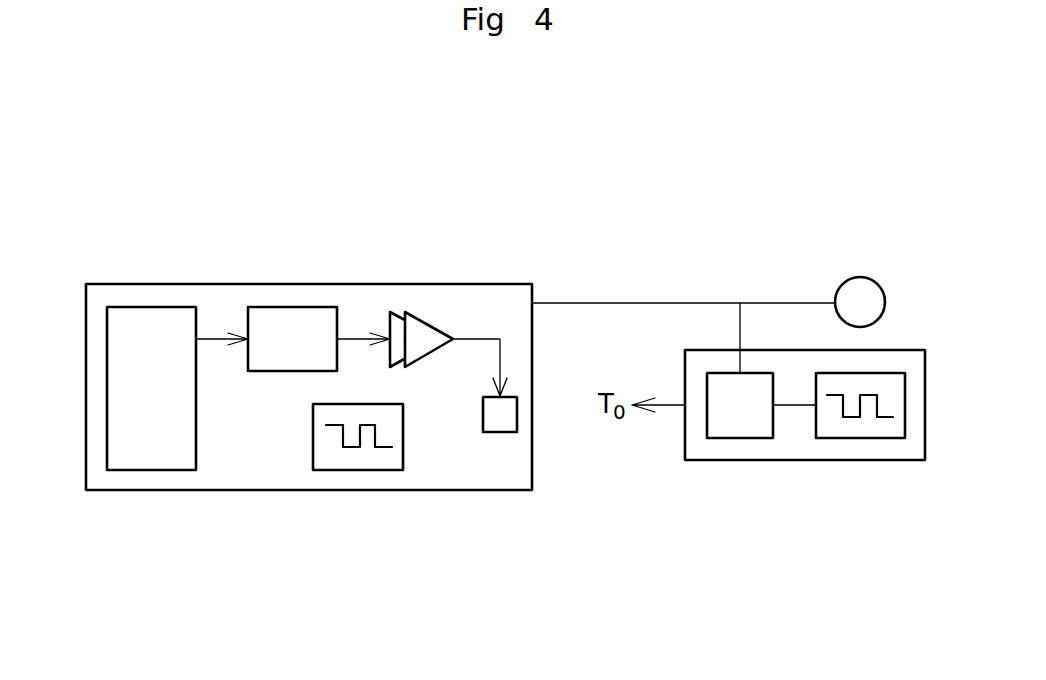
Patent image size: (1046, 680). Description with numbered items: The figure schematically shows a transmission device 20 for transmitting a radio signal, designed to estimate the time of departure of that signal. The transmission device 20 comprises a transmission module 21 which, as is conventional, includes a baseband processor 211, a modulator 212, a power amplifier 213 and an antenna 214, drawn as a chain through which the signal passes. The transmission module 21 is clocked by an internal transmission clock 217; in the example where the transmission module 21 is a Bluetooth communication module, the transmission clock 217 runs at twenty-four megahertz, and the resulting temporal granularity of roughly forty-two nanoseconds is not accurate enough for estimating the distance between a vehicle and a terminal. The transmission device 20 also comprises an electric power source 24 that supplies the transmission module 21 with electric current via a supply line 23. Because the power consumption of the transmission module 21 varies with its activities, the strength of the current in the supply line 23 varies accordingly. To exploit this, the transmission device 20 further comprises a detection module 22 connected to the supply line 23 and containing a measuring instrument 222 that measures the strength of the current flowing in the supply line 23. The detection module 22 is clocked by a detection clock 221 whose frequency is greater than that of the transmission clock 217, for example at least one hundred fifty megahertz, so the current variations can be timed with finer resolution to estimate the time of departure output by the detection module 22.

The transmission device 20 is at (275, 185).
The transmission module 21 is at (218, 490).
The baseband processor 211 is at (130, 307).
The modulator 212 is at (293, 307).
The power amplifier 213 is at (422, 316).
The antenna 214 is at (500, 432).
The transmission clock 217 is at (360, 470).
The detection module 22 is at (803, 460).
The detection clock 221 is at (870, 438).
The measuring instrument 222 is at (740, 438).
The supply line 23 is at (637, 303).
The electric power source 24 is at (860, 277).